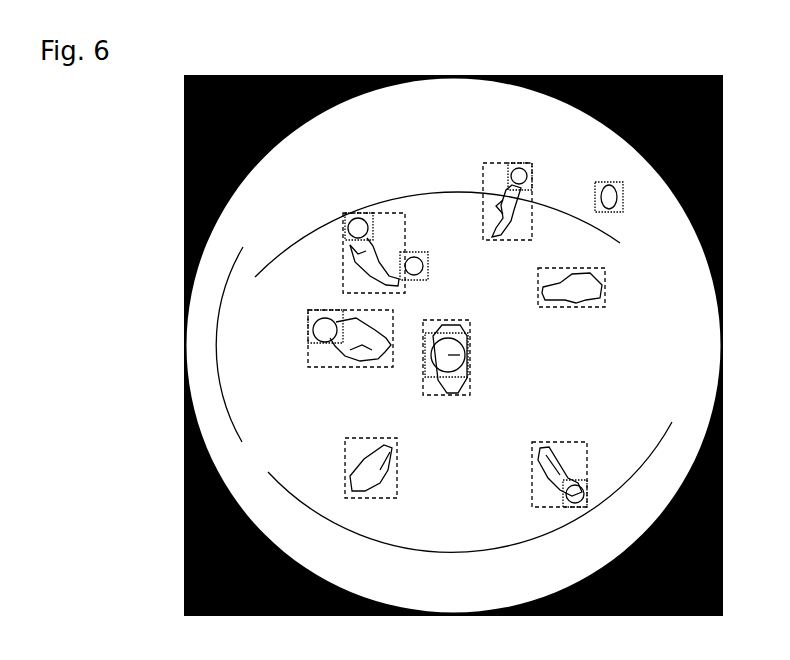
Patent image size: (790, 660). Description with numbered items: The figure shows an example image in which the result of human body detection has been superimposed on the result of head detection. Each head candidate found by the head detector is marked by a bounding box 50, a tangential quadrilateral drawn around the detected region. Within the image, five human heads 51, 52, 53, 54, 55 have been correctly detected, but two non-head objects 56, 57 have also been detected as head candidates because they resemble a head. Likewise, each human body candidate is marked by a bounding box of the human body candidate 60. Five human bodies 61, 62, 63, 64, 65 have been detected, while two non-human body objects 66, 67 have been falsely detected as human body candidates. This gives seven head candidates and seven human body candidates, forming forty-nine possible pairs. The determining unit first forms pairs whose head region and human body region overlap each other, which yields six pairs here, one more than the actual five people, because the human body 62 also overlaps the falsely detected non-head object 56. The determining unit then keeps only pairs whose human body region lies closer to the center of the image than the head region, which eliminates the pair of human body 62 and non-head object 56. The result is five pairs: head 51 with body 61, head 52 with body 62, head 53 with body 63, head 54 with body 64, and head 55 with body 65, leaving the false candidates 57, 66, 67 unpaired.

The bounding box 50 is at (313, 325).
The human head 51 is at (311, 336).
The human head 52 is at (359, 220).
The human head 53 is at (514, 173).
The human head 54 is at (456, 358).
The human head 55 is at (584, 492).
The non-head object 56 is at (426, 264).
The non-head object 57 is at (608, 186).
The bounding box of the human body candidate 60 is at (368, 367).
The human body 61 is at (338, 362).
The human body 62 is at (354, 247).
The human body 63 is at (494, 203).
The human body 64 is at (470, 385).
The human body 65 is at (562, 470).
The non-human body object 66 is at (397, 468).
The non-human body object 67 is at (580, 302).